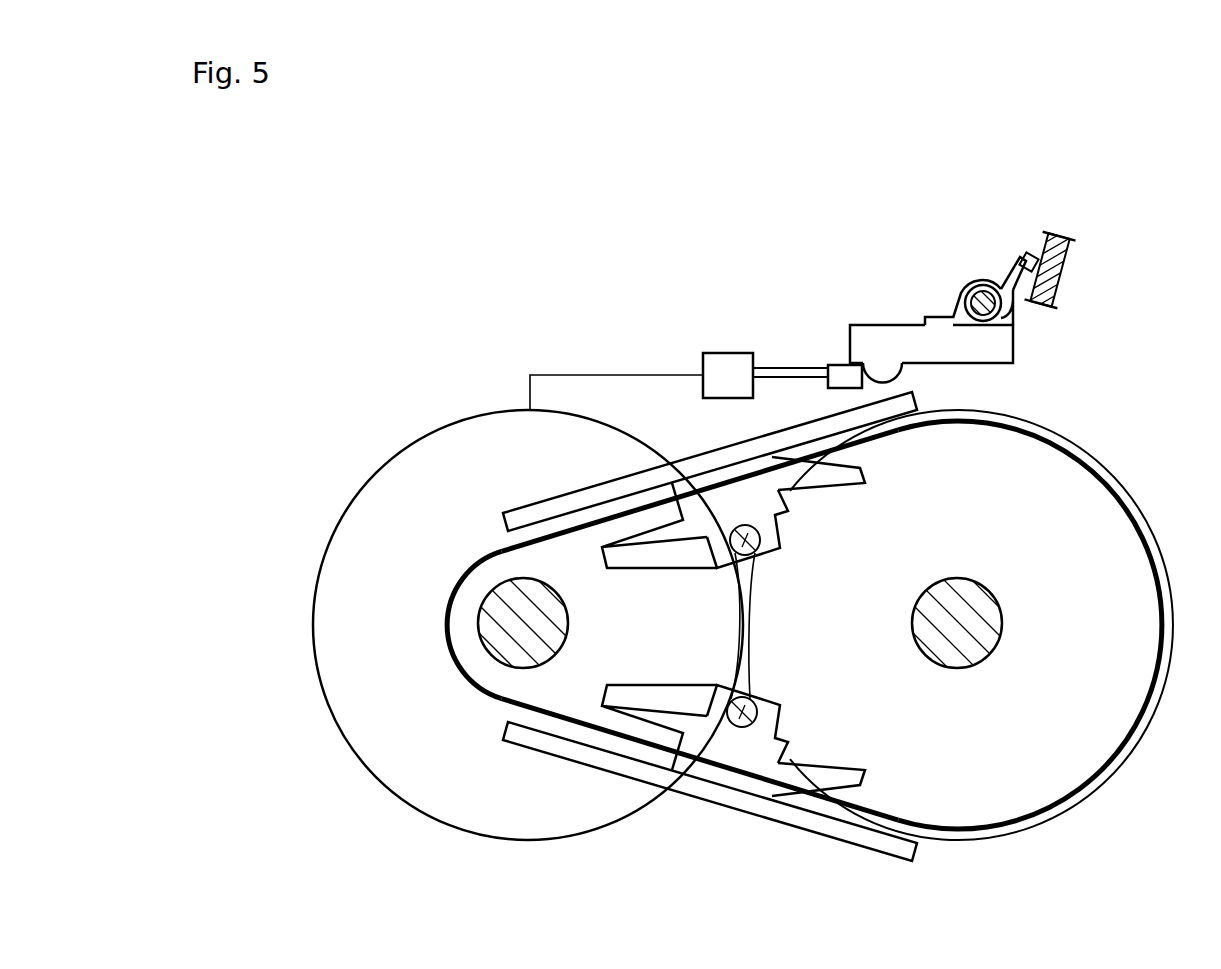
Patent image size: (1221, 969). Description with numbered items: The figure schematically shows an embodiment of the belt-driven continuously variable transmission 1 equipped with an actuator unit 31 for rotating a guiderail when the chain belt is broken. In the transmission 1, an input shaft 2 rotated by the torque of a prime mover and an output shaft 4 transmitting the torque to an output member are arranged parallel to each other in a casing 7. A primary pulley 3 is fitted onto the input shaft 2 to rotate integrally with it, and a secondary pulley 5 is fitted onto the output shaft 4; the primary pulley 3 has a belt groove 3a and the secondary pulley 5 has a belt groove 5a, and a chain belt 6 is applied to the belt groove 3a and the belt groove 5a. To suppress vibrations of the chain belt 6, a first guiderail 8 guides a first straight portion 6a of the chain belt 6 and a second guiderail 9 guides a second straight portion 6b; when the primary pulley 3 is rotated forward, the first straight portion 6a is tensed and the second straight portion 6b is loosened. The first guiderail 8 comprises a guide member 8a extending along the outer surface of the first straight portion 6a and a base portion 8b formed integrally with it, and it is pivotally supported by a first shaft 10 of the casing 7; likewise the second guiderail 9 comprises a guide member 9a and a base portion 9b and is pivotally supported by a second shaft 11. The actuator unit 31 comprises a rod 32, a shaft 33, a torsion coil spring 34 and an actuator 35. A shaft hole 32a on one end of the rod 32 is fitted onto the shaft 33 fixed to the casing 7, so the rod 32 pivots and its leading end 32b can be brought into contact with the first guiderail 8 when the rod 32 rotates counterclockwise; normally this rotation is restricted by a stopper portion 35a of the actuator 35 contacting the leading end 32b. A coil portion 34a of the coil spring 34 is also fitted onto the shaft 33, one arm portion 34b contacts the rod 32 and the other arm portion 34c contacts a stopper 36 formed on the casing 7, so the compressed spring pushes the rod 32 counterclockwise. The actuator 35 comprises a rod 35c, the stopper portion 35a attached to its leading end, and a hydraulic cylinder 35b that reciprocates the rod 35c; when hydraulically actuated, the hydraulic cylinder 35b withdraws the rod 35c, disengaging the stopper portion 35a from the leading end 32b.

The belt-driven continuously variable transmission 1 is at (1079, 156).
The input shaft 2 is at (985, 600).
The primary pulley 3 is at (1169, 536).
The belt groove 3a is at (1048, 780).
The output shaft 4 is at (497, 642).
The secondary pulley 5 is at (315, 620).
The belt groove 5a is at (366, 735).
The chain belt 6 is at (487, 548).
The first straight portion 6a is at (576, 531).
The second straight portion 6b is at (590, 727).
The casing 7 is at (1052, 262).
The first guiderail 8 is at (812, 527).
The guide member 8a is at (704, 500).
The base portion 8b is at (718, 566).
The second guiderail 9 is at (757, 845).
The guide member 9a is at (718, 772).
The base portion 9b is at (714, 698).
The first shaft 10 is at (757, 553).
The second shaft 11 is at (758, 700).
The actuator unit 31 is at (790, 262).
The rod 32 is at (890, 312).
The shaft hole 32a is at (1018, 318).
The leading end 32b is at (850, 330).
The shaft 33 is at (982, 290).
The torsion coil spring 34 is at (955, 292).
The coil portion 34a is at (966, 284).
The arm portion 34b is at (930, 318).
The arm portion 34c is at (1003, 283).
The actuator 35 is at (752, 322).
The stopper portion 35a is at (840, 385).
The hydraulic cylinder 35b is at (715, 388).
The rod 35c is at (800, 368).
The stopper 36 is at (1027, 256).